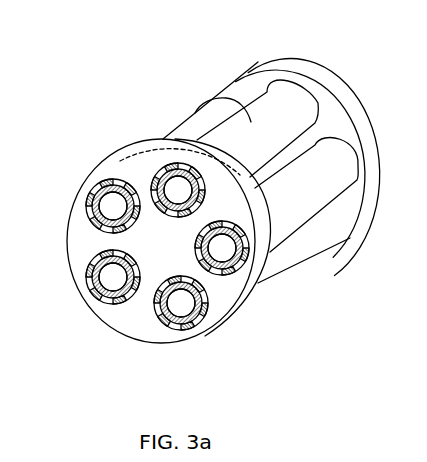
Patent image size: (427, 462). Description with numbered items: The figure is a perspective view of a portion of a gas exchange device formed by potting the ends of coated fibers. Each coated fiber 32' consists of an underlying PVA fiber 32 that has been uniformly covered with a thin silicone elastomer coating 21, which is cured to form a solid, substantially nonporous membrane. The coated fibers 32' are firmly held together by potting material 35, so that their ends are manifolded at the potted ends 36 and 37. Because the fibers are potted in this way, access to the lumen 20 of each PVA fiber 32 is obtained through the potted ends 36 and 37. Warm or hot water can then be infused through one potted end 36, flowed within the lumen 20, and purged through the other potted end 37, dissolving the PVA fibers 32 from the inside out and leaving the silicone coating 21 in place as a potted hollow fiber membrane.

The lumen 20 is at (178, 190).
The coating 21 is at (157, 305).
The PVA fiber 32 is at (132, 246).
The coated fiber 32' is at (256, 192).
The potting material 35 is at (145, 170).
The potted end 36 is at (252, 300).
The potted end 37 is at (378, 162).